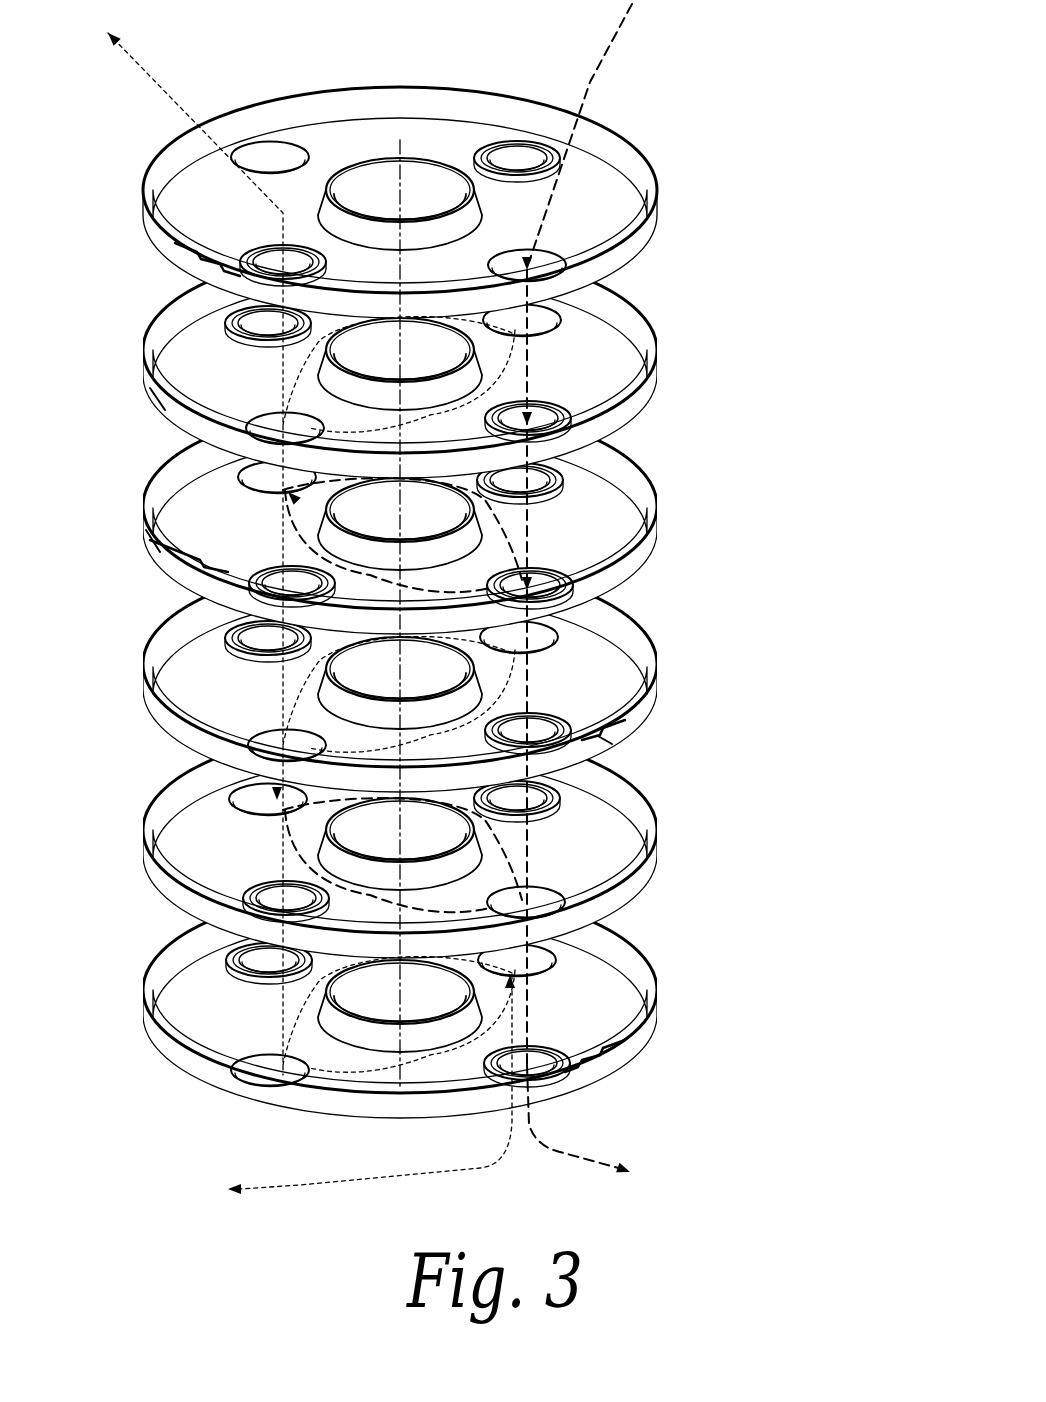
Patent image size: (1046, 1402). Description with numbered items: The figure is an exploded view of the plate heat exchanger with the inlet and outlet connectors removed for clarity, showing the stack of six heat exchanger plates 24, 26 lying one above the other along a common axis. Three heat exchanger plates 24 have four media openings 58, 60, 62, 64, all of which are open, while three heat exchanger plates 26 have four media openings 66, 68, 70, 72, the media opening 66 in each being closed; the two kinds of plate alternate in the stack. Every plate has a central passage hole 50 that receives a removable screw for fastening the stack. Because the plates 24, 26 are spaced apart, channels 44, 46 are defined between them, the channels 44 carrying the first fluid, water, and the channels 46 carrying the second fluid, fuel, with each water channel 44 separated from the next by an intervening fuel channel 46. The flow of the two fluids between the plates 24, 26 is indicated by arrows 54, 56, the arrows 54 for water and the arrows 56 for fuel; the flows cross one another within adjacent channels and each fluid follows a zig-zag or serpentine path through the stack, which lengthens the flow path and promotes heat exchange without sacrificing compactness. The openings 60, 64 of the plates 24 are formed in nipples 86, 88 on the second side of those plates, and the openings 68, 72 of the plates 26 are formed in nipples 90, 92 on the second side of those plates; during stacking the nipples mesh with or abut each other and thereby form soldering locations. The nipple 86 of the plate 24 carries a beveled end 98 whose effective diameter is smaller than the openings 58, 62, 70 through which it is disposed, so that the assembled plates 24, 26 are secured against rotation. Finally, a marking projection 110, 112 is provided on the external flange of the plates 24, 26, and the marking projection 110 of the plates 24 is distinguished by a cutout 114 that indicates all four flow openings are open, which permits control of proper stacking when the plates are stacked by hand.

The heat exchanger plate 24 is at (634, 250).
The heat exchanger plate 26 is at (645, 392).
The channel 44 is at (620, 512).
The channel 46 is at (610, 347).
The central passage hole 50 is at (420, 185).
The arrows 54 is at (608, 57).
The arrows 56 is at (300, 1186).
The media opening 58 is at (548, 258).
The media opening 60 is at (532, 150).
The media opening 62 is at (262, 148).
The media opening 64 is at (243, 255).
The media opening 66 is at (280, 418).
The media opening 68 is at (567, 415).
The media opening 70 is at (553, 317).
The media opening 72 is at (248, 340).
The nipple 86 is at (560, 166).
The nipple 88 is at (258, 256).
The nipple 90 is at (562, 432).
The nipple 92 is at (150, 390).
The beveled end 98 is at (542, 1050).
The marking projection 110 is at (195, 257).
The marking projection 112 is at (200, 290).
The cutout 114 is at (197, 278).